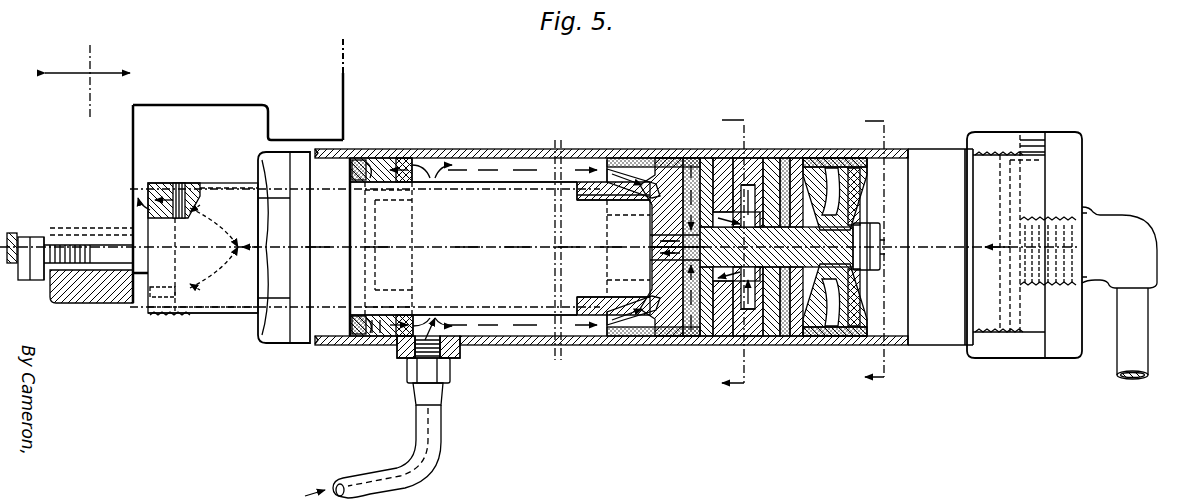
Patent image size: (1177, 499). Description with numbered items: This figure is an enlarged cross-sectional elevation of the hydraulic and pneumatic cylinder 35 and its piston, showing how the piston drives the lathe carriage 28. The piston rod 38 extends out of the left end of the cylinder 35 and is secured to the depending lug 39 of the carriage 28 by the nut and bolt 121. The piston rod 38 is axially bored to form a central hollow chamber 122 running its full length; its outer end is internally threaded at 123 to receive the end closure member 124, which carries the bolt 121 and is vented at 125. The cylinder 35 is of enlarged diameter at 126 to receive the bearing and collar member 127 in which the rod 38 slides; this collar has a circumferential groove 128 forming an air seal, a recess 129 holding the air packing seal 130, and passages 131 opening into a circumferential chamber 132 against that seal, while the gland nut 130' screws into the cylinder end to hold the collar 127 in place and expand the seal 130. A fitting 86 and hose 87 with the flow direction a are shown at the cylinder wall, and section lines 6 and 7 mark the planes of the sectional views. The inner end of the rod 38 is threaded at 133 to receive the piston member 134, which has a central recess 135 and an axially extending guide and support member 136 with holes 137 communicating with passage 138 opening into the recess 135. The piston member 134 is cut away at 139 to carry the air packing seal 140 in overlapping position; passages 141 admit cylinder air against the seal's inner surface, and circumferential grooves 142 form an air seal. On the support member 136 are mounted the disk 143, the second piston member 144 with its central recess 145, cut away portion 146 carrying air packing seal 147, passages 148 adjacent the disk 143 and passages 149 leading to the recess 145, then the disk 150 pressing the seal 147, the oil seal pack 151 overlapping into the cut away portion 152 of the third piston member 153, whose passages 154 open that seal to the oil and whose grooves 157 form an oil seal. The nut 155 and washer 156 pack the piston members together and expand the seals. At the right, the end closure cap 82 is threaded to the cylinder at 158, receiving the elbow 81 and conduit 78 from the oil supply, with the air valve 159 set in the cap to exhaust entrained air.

The depending lug 39 is at (64, 157).
The carriage 28 is at (345, 78).
The gland nut 130' is at (267, 240).
The vent 125 is at (162, 190).
The central hollow chamber 122 is at (183, 196).
The nut and bolt 121 is at (28, 262).
The end closure member 124 is at (133, 300).
The internal threads 123 is at (165, 316).
The piston rod 38 is at (215, 310).
The air packing seal 130 is at (335, 230).
The recess 129 is at (366, 162).
The bearing and collar member 127 is at (372, 165).
The passages 131 is at (400, 160).
The circumferential groove 128 is at (395, 330).
The enlarged diameter 126 is at (435, 162).
The internal threads 133 is at (577, 195).
The central recess 135 is at (600, 227).
The piston member 134 is at (600, 233).
The circumferential chamber 132 is at (382, 272).
The passage 138 is at (662, 252).
The pipe fitting 86 is at (443, 392).
The flexible hose 87 is at (440, 455).
The flow direction a is at (308, 492).
The passages 141 is at (622, 170).
The circumferential grooves 142 is at (625, 332).
The cut away portion 139 is at (673, 158).
The air packing seal 140 is at (675, 162).
The disk 143 is at (692, 160).
The passages 148 is at (706, 338).
The section line 6- 6 is at (721, 251).
The second piston member 144 is at (728, 160).
The passages 149 is at (748, 183).
The cut away portion 146 is at (760, 160).
The air packing seal 147 is at (785, 160).
The disk 150 is at (770, 336).
The cut away portion 152 is at (797, 160).
The third piston member 153 is at (830, 160).
The oil seal pack 151 is at (820, 336).
The circumferential grooves 157 is at (856, 338).
The section line 7- 7 is at (865, 249).
The passages 154 is at (838, 190).
The washer 156 is at (858, 215).
The nut 155 is at (868, 235).
The guide and support member 136 is at (736, 218).
The central recess 145 is at (776, 247).
The holes 137 is at (736, 265).
The hydraulic and pneumatic cylinder 35 is at (900, 150).
The threads 158 is at (985, 148).
The air valve 159 is at (1038, 138).
The end closure cap 82 is at (1073, 136).
The elbow 81 is at (1133, 240).
The conduit 78 is at (1120, 373).